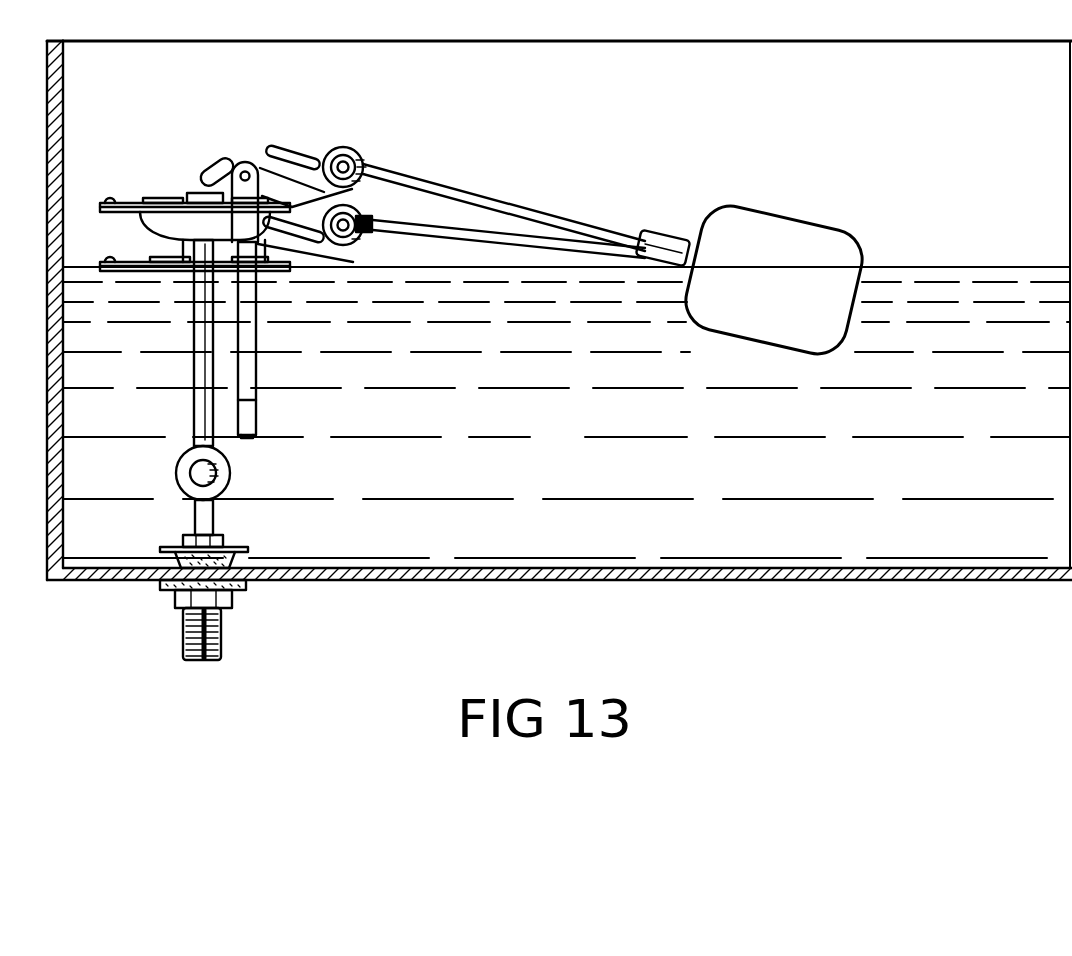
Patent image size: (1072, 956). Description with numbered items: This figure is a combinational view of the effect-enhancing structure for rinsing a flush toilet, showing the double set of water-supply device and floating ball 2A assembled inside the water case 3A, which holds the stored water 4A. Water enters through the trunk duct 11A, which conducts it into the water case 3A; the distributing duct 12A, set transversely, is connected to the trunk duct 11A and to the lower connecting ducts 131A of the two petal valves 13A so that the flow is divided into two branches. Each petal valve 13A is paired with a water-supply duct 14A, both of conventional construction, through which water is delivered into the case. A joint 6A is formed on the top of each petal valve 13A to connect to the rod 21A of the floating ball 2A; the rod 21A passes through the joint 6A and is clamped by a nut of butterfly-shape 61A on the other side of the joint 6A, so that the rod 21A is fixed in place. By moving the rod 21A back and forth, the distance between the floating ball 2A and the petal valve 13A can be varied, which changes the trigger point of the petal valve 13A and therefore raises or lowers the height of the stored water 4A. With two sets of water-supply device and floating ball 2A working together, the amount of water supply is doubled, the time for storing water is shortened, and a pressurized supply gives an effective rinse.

The floating ball 2A is at (762, 222).
The water case 3A is at (1071, 165).
The stored water 4A is at (576, 448).
The joint 6A is at (263, 176).
The trunk duct 11A is at (215, 508).
The distributing duct 12A is at (178, 475).
The petal valve 13A is at (175, 204).
The water-supply duct 14A is at (244, 348).
The rod 21A is at (495, 204).
The nut of butterfly-shape 61A is at (372, 162).
The lower connecting duct 131A is at (204, 362).